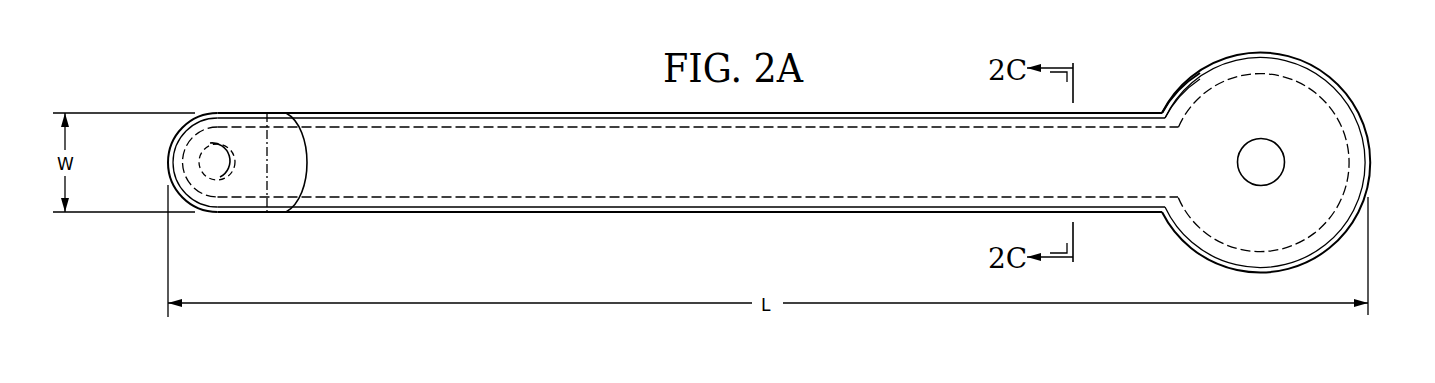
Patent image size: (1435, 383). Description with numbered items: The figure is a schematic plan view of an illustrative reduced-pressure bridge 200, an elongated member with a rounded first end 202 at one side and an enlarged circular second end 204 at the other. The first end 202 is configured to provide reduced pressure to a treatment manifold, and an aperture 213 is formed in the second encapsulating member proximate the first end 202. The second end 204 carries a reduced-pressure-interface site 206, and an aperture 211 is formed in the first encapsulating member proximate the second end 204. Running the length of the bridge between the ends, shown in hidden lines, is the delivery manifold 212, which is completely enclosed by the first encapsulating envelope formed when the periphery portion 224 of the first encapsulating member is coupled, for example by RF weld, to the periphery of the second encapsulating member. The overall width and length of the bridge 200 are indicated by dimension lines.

The reduced-pressure bridge 200 is at (122, 243).
The first end 202 is at (169, 165).
The second end 204 is at (1364, 121).
The reduced-pressure-interface site 206 is at (1176, 98).
The aperture 211 is at (1268, 182).
The delivery manifold 212 is at (353, 125).
The aperture 213 is at (222, 135).
The periphery portion 224 is at (455, 113).